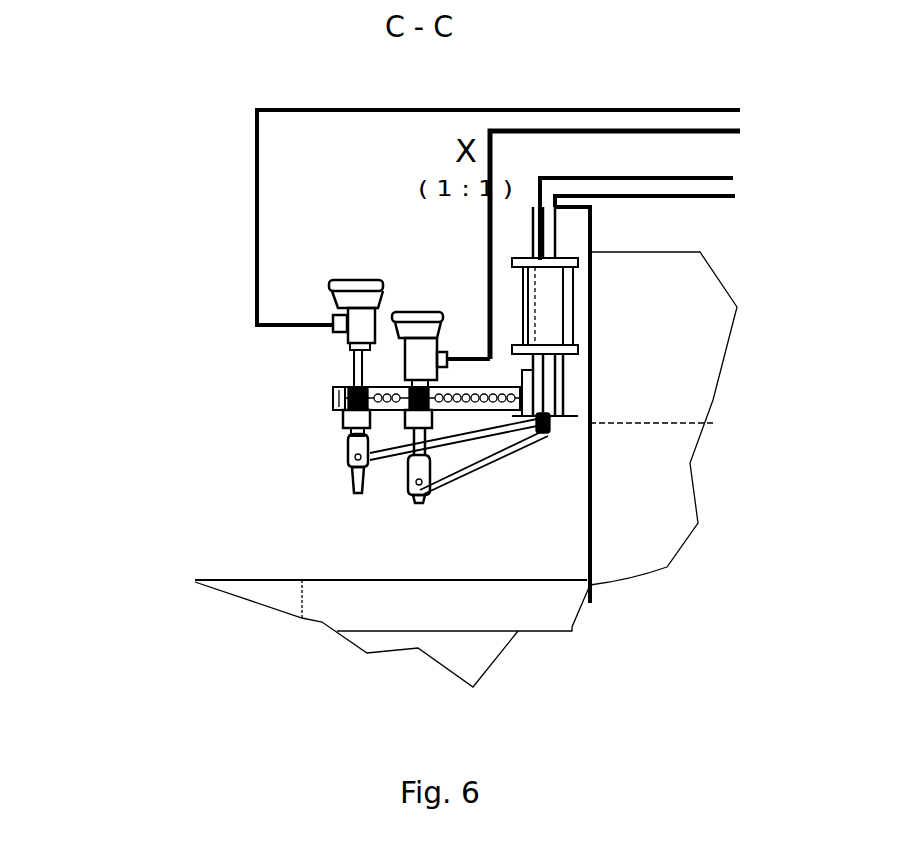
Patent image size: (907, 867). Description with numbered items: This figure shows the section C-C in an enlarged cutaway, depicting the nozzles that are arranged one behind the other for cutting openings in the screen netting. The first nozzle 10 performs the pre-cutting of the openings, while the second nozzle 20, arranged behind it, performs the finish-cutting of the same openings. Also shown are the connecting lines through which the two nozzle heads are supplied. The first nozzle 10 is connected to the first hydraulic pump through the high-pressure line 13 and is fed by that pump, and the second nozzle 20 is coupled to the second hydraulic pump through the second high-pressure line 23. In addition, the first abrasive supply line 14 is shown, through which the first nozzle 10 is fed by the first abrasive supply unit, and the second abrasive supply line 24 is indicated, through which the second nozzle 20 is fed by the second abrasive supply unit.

The first nozzle 10 is at (357, 480).
The second nozzle 20 is at (418, 497).
The high-pressure line 13 is at (590, 108).
The second high-pressure line 23 is at (673, 131).
The first abrasive supply line 14 is at (685, 178).
The second abrasive supply line 24 is at (708, 199).